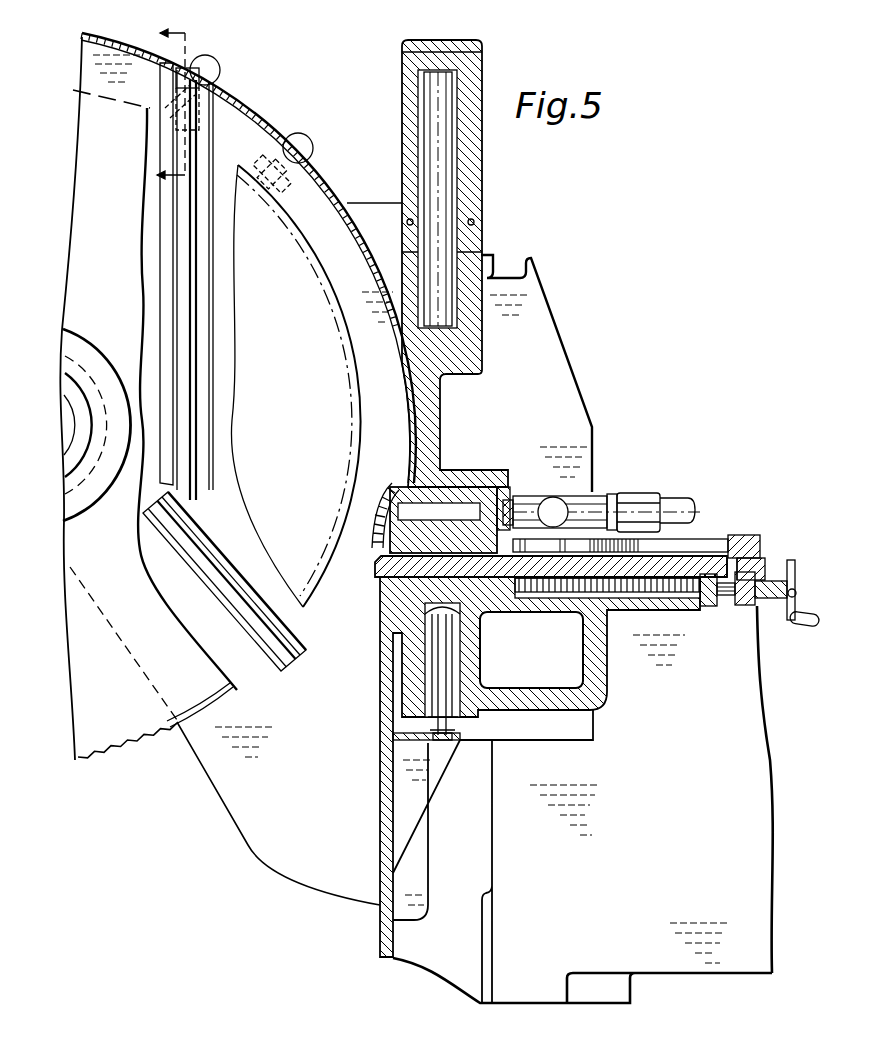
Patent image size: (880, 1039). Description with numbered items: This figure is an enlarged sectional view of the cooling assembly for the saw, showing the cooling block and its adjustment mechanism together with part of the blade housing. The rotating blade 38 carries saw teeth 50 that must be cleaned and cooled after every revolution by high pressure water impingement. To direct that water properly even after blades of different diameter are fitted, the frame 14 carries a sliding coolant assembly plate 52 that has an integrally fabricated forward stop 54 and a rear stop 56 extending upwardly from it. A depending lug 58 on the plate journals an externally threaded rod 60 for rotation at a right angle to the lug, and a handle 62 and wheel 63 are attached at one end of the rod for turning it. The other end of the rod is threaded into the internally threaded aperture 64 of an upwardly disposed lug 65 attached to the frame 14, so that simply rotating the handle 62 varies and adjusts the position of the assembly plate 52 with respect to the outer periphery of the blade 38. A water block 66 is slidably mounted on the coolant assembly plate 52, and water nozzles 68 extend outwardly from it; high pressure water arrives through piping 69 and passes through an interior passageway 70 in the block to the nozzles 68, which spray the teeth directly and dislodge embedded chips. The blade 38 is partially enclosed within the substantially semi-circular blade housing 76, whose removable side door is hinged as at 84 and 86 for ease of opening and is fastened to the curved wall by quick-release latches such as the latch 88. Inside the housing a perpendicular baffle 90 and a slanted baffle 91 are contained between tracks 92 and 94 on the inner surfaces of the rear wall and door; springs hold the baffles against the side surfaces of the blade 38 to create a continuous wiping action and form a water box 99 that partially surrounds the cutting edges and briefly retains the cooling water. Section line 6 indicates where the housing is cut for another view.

The section line 6- 6 is at (161, 103).
The frame 14 is at (593, 704).
The blade 38 is at (105, 745).
The saw teeth 50 is at (148, 740).
The coolant assembly plate 52 is at (767, 560).
The forward stop 54 is at (378, 562).
The rear stop 56 is at (748, 538).
The depending lug 58 is at (756, 605).
The externally threaded rod 60 is at (730, 600).
The handle 62 is at (812, 623).
The wheel 63 is at (796, 573).
The internally threaded aperture 64 is at (703, 607).
The upwardly disposed lug 65 is at (710, 607).
The water block 66 is at (470, 522).
The water nozzles 68 is at (379, 499).
The piping 69 is at (636, 503).
The interior passageway 70 is at (460, 507).
The blade housing 76 is at (252, 108).
The hinge 84 is at (462, 727).
The hinge 86 is at (452, 97).
The quick-release latch 88 is at (305, 140).
The perpendicular baffle 90 is at (185, 160).
The slanted baffle 91 is at (228, 592).
The track 92 is at (163, 350).
The track 94 is at (200, 410).
The water box 99 is at (290, 376).